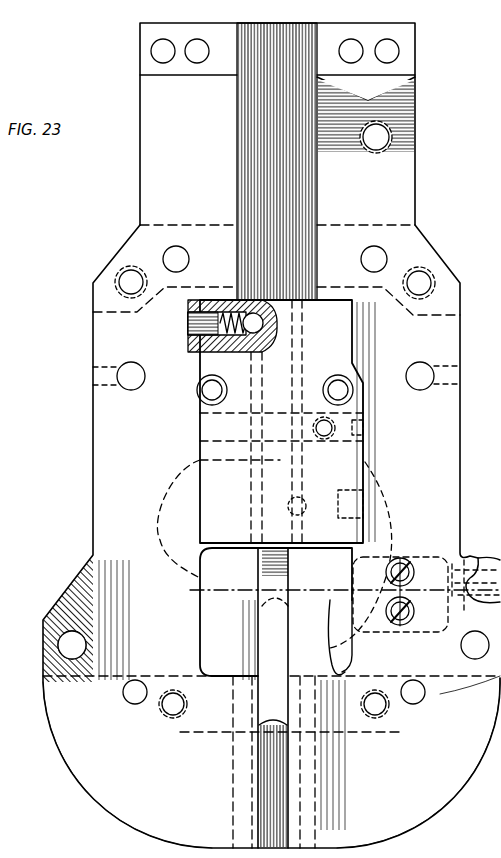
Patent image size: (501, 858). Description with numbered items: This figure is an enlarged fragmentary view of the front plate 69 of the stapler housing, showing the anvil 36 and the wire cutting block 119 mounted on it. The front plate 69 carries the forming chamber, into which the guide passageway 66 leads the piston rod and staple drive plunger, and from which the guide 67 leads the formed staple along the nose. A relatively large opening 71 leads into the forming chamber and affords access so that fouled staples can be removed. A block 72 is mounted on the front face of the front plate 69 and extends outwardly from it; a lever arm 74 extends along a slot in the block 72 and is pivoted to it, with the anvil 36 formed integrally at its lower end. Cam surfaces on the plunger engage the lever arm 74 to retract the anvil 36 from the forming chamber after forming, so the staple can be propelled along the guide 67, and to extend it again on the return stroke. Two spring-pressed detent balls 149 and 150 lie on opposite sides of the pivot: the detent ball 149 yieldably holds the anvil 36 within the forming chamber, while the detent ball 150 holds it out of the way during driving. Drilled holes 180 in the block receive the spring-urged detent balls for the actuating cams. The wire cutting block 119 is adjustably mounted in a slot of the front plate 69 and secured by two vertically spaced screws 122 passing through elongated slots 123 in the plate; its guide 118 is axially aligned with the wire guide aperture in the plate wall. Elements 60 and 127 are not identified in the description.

The anvil 36 is at (262, 600).
The mounting flange 60 is at (477, 556).
The guide passageway 66 is at (318, 172).
The guide 67 is at (335, 808).
The front plate 69 is at (415, 222).
The opening 71 is at (223, 673).
The block 72 is at (198, 410).
The lever arm 74 is at (262, 566).
The guide 118 is at (455, 696).
The wire cutting block 119 is at (338, 642).
The screws 122 is at (408, 628).
The elongated slots 123 is at (406, 570).
The cam surface 127 is at (350, 577).
The detent ball 149 is at (252, 335).
The detent ball 150 is at (270, 510).
The drilled holes 180 is at (208, 391).